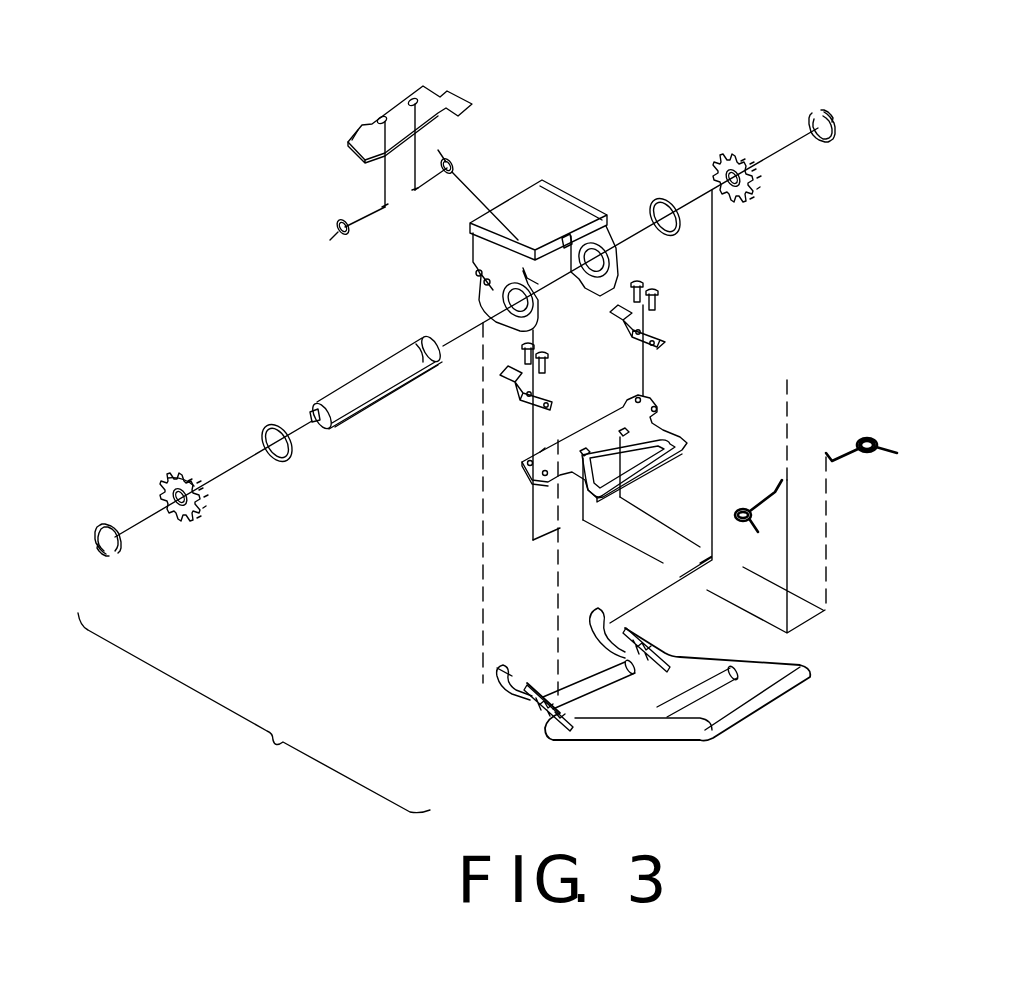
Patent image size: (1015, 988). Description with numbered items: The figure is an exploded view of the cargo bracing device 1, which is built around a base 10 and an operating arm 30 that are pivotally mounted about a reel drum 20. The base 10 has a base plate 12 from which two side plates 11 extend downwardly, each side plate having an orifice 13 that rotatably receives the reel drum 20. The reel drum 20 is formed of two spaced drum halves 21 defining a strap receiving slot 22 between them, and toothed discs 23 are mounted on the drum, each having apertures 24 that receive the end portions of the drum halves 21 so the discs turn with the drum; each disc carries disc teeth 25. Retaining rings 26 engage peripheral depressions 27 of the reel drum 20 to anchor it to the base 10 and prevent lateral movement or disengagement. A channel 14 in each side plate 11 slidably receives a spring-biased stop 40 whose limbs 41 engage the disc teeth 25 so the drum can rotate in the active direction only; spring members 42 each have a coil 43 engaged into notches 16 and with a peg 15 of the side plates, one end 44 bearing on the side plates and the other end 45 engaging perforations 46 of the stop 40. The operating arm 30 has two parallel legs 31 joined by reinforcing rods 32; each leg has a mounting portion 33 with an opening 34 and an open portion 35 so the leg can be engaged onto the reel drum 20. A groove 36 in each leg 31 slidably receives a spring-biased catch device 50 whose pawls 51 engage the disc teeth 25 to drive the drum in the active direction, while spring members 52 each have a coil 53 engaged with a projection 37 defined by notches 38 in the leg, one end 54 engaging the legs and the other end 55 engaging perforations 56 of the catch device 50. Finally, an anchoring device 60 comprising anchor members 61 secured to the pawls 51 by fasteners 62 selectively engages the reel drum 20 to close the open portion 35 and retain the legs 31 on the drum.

The cargo bracing device 1 is at (910, 228).
The base 10 is at (537, 231).
The side plates 11 is at (478, 247).
The base plate 12 is at (522, 208).
The orifice 13 is at (600, 265).
The channel 14 is at (568, 246).
The peg 15 is at (478, 288).
The notches 16 is at (472, 275).
The reel drum 20 is at (347, 410).
The drum halves 21 is at (318, 412).
The strap receiving slot 22 is at (375, 400).
The toothed discs 23 is at (739, 148).
The apertures 24 is at (167, 485).
The disc teeth 25 is at (198, 493).
The retaining rings 26 is at (100, 530).
The peripheral depressions 27 is at (332, 408).
The operating arm 30 is at (606, 687).
The legs 31 is at (623, 727).
The rods 32 is at (680, 705).
The mounting portion 33 is at (598, 594).
The opening 34 is at (505, 672).
The open portion 35 is at (480, 670).
The groove 36 is at (547, 733).
The projection 37 is at (533, 707).
The notches 38 is at (527, 713).
The spring-biased stop 40 is at (384, 165).
The limbs 41 is at (370, 153).
The spring members 42 is at (466, 153).
The coil 43 is at (343, 234).
The one end 44 is at (340, 220).
The other end 45 is at (388, 209).
The perforations 46 is at (407, 95).
The spring-biased catch device 50 is at (644, 445).
The pawls 51 is at (595, 413).
The spring members 52 is at (751, 496).
The coil 53 is at (870, 460).
The one end 54 is at (895, 450).
The other end 55 is at (826, 455).
The perforations 56 is at (586, 456).
The anchoring device 60 is at (524, 410).
The anchor members 61 is at (550, 403).
The fasteners 62 is at (641, 281).